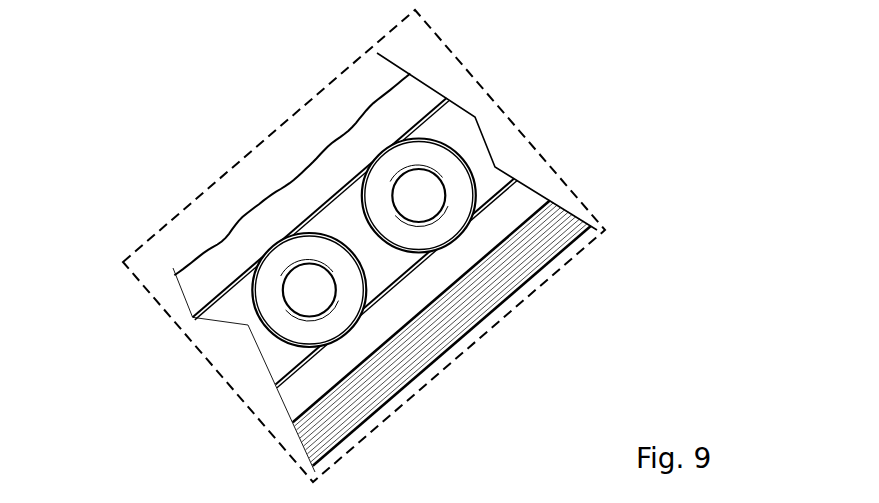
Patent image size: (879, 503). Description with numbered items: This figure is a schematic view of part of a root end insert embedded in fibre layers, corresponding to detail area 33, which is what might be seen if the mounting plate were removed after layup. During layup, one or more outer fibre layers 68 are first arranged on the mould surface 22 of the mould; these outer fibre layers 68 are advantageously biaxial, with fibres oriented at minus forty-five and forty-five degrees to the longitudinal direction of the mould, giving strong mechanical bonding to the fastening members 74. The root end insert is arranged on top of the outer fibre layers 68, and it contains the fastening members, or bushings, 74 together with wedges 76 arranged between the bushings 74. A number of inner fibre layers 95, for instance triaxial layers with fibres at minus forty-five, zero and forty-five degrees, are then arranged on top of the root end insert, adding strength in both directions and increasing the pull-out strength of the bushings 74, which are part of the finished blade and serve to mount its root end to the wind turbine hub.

The detail area 33 is at (63, 52).
The inner fibre layers 95 is at (216, 253).
The outer fibre layers 68 is at (298, 403).
The mould surface 22 is at (470, 317).
The wedges 76 is at (348, 213).
The fastening members 74 is at (438, 158).